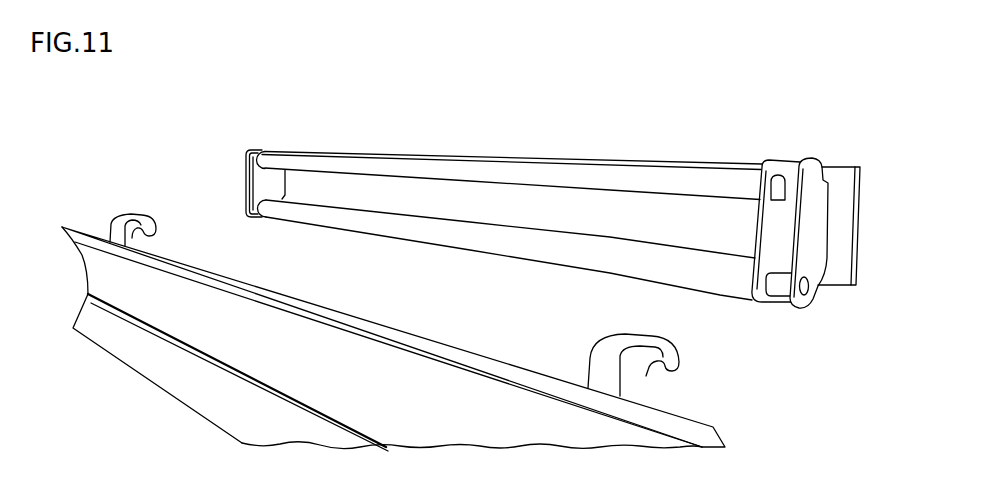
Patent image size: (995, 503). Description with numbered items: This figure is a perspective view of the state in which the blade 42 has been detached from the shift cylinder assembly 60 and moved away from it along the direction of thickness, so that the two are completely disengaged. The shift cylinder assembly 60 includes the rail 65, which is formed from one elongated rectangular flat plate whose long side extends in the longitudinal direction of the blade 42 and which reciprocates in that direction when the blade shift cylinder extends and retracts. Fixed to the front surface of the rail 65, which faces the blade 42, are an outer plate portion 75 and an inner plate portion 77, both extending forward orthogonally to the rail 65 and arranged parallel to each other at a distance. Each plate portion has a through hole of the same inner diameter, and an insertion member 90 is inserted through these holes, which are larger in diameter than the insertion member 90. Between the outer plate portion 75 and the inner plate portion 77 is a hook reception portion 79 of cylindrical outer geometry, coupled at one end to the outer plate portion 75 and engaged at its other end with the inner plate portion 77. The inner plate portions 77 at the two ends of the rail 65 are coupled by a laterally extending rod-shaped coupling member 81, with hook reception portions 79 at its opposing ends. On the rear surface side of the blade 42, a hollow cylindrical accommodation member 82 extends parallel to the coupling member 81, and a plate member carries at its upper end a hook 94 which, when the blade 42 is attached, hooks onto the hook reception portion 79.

The blade 42 is at (170, 373).
The hook 94 is at (122, 219).
The coupling member 81 is at (510, 172).
The accommodation member 82 is at (548, 248).
The hook reception portion 79 is at (788, 182).
The insertion member 90 is at (778, 294).
The inner plate portion 77 is at (762, 230).
The outer plate portion 75 is at (808, 240).
The rail 65 is at (838, 180).
The shift cylinder assembly 60 is at (789, 243).